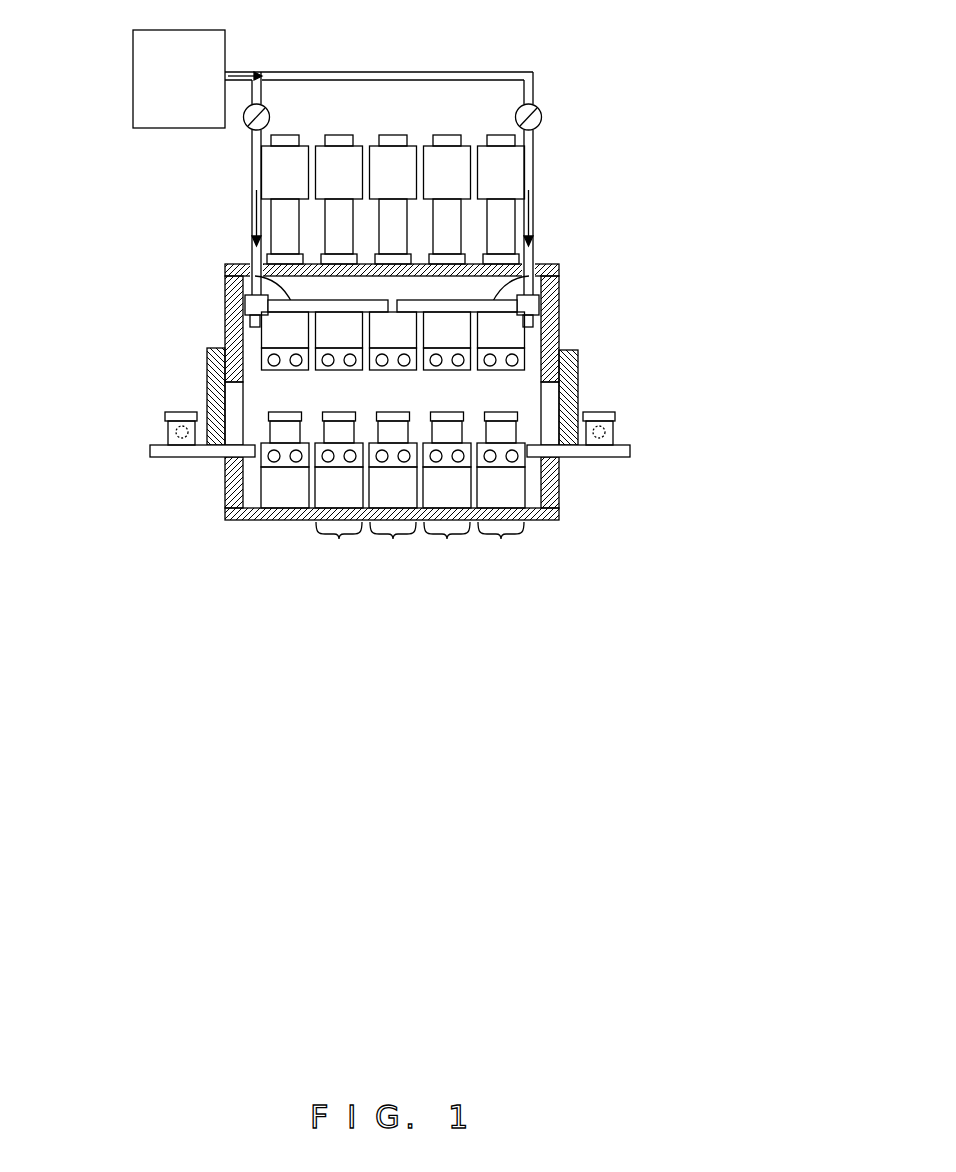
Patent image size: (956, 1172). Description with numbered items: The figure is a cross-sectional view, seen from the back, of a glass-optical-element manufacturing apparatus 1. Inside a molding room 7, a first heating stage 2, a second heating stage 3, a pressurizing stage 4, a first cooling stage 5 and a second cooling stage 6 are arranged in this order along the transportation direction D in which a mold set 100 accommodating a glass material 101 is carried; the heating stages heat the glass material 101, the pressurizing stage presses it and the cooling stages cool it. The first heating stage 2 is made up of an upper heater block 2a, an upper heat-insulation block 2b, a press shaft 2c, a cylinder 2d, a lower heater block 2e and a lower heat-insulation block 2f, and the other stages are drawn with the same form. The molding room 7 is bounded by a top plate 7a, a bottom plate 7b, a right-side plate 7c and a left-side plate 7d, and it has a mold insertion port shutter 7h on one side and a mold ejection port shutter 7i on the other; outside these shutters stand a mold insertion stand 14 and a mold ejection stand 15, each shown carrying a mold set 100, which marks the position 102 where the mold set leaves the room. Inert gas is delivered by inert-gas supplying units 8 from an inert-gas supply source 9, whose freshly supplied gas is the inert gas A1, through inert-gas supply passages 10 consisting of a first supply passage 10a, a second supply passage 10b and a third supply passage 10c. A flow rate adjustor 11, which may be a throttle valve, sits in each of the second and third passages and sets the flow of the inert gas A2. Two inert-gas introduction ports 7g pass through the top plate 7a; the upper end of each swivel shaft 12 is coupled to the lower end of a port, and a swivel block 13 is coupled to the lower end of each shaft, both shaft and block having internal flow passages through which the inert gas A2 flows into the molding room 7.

The glass-optical-element manufacturing apparatus 1 is at (98, 46).
The first heating stage 2 is at (238, 350).
The second heating stage 3 is at (339, 350).
The pressurizing stage 4 is at (393, 350).
The first cooling stage 5 is at (447, 350).
The second cooling stage 6 is at (501, 350).
The upper heater block 2a is at (261, 357).
The upper heat-insulation block 2b is at (261, 334).
The press shaft 2c is at (267, 259).
The cylinder 2d is at (261, 176).
The lower heater block 2e is at (261, 459).
The lower heat-insulation block 2f is at (261, 480).
The molding room 7 is at (390, 367).
The top plate 7a is at (557, 263).
The bottom plate 7b is at (560, 513).
The right-side plate 7c is at (225, 290).
The left-side plate 7d is at (560, 327).
The inert-gas introduction port 7g is at (257, 267).
The mold insertion port shutter 7h is at (207, 353).
The mold ejection port shutter 7i is at (578, 384).
The inert-gas supplying unit 8 is at (257, 271).
The inert-gas supply source 9 is at (226, 44).
The inert-gas supply passages 10 is at (355, 154).
The first supply passage 10a is at (231, 77).
The second supply passage 10b is at (251, 147).
The third supply passage 10c is at (380, 72).
The flow rate adjustor 11 is at (270, 117).
The swivel shaft 12 is at (268, 301).
The swivel block 13 is at (245, 305).
The mold insertion stand 14 is at (152, 445).
The mold ejection stand 15 is at (630, 446).
The mold set 100 is at (166, 413).
The glass material 101 is at (178, 437).
The unloading position 102 is at (603, 437).
The inert gas A1 is at (228, 82).
The inert gas A2 is at (251, 208).
The transportation direction D is at (388, 403).